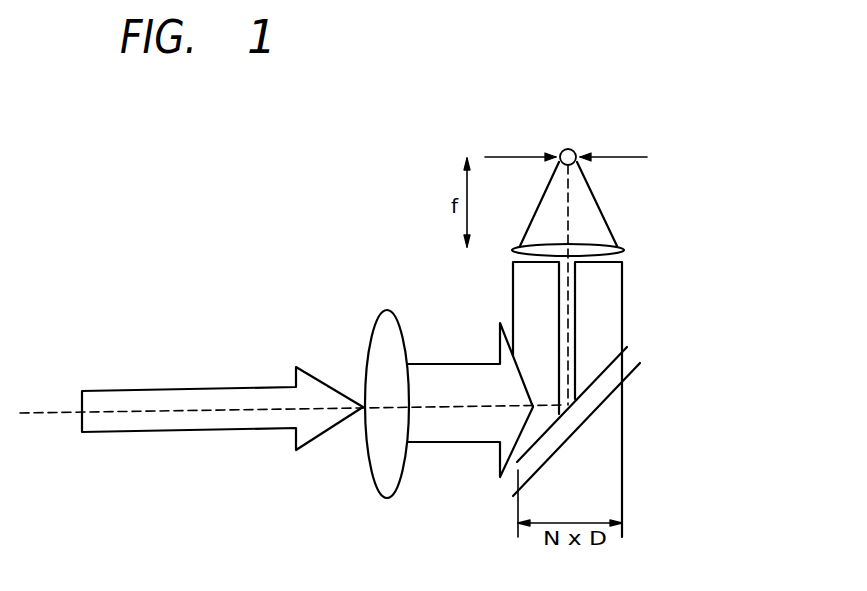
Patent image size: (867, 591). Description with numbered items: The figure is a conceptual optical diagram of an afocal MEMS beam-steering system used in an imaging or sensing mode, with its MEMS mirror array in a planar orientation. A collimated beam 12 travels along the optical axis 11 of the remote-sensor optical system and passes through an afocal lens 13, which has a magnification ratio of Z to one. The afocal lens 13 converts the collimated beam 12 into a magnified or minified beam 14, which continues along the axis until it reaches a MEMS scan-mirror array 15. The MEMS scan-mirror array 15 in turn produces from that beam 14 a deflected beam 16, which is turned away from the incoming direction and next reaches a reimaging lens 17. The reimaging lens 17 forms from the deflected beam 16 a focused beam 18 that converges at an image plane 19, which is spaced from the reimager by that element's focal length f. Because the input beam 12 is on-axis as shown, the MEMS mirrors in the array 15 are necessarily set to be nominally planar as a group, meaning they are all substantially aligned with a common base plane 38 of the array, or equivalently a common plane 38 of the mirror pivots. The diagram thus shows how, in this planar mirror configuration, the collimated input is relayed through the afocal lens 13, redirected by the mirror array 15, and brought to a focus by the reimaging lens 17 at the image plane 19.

The optical axis 11 is at (49, 413).
The collimated beam 12 is at (308, 443).
The afocal lens 13 is at (395, 478).
The magnified or minified beam 14 is at (460, 430).
The MEMS scan-mirror array 15 is at (612, 395).
The deflected beam 16 is at (525, 303).
The reimaging lens 17 is at (597, 248).
The focused beam 18 is at (550, 202).
The image plane 19 is at (576, 152).
The common base plane 38 is at (570, 440).